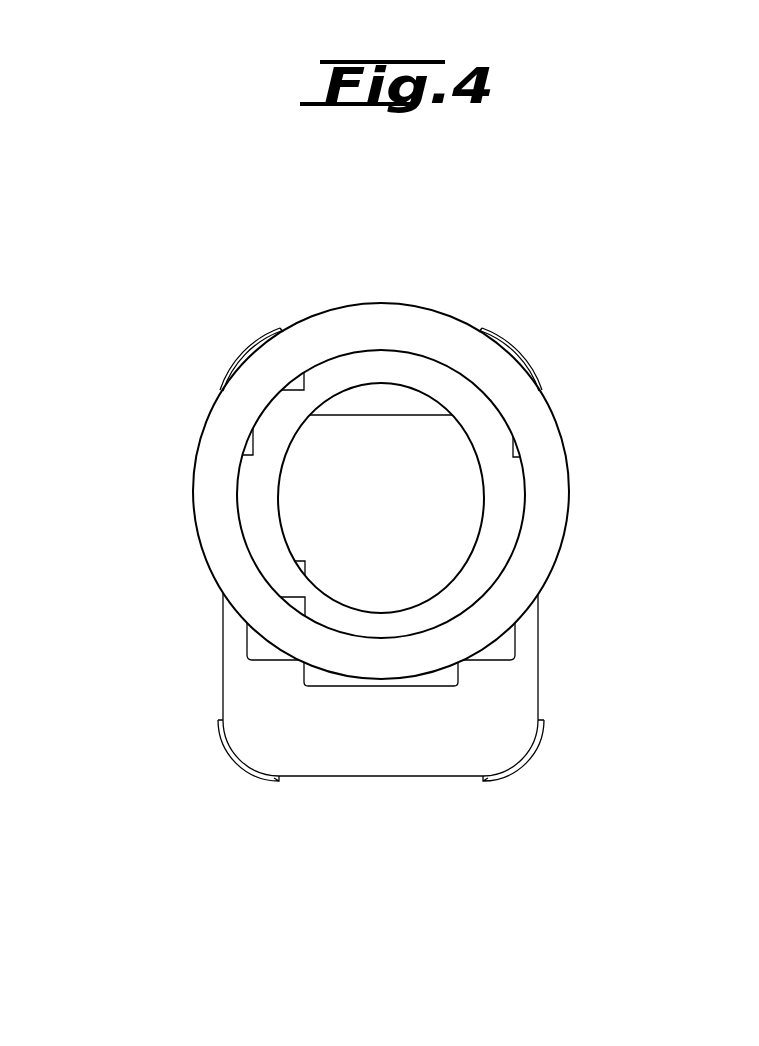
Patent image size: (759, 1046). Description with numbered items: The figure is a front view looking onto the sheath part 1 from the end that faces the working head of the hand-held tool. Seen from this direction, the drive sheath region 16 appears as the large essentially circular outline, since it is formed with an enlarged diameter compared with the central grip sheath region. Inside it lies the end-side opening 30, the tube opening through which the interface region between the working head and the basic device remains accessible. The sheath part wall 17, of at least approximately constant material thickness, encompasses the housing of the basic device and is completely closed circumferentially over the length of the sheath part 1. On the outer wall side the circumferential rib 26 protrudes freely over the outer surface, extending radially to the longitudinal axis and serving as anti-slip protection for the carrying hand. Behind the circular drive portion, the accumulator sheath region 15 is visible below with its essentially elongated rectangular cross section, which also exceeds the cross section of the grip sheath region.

The sheath part 1 is at (500, 285).
The accumulator sheath region 15 is at (538, 673).
The drive sheath region 16 is at (545, 526).
The sheath part wall 17 is at (207, 505).
The rib 26 is at (564, 441).
The opening 30 is at (420, 458).